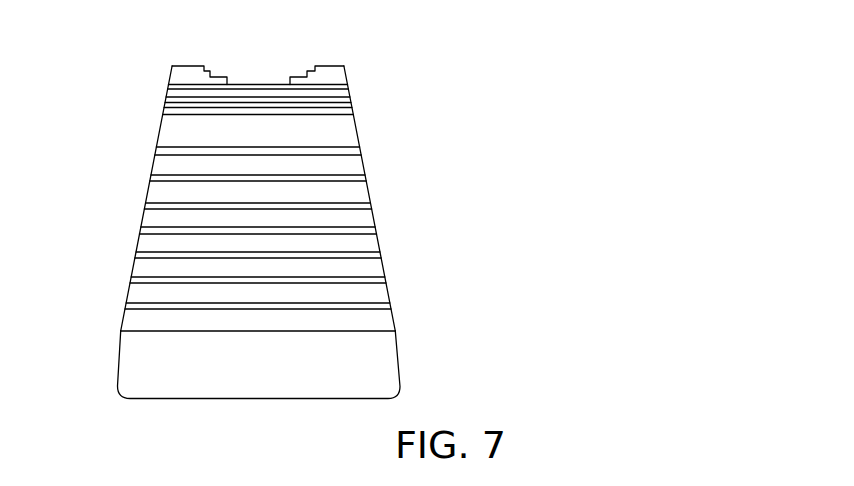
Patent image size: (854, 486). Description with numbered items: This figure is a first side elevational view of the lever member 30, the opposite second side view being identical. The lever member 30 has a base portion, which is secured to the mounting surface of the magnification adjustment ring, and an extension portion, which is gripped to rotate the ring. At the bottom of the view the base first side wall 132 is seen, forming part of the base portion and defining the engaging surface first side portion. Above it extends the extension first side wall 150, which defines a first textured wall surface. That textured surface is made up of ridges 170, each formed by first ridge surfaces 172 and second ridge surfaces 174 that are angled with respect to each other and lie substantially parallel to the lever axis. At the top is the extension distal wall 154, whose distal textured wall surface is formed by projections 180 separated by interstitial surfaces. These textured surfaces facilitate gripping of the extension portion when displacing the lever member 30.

The lever member 30 is at (473, 168).
The extension distal wall 154 is at (189, 65).
The projections 180 is at (330, 68).
The extension first side wall 150 is at (165, 200).
The first ridge surfaces 172 is at (366, 218).
The second ridge surfaces 174 is at (362, 233).
The ridges 170 is at (366, 278).
The base first side wall 132 is at (171, 382).